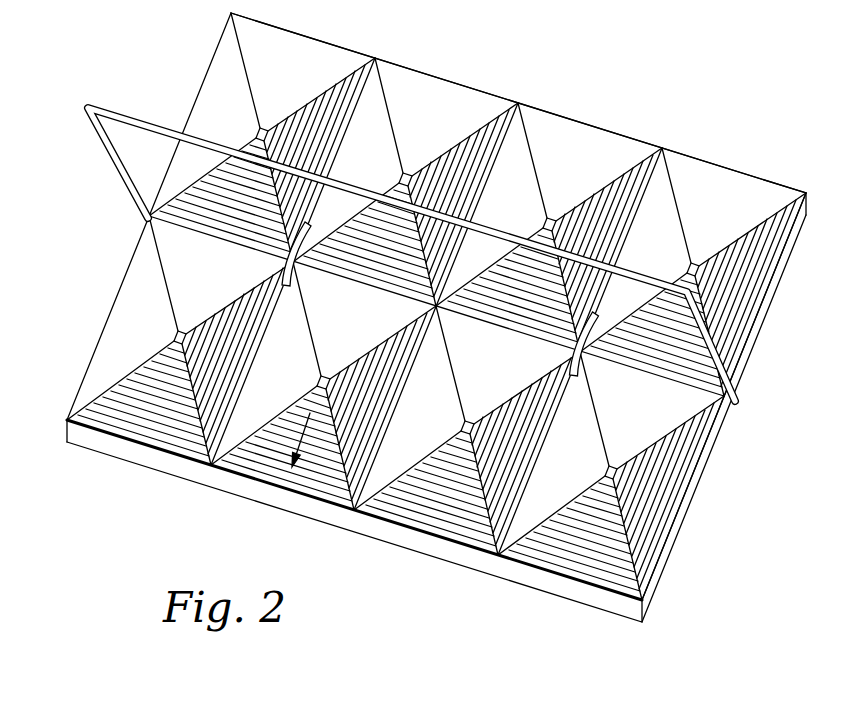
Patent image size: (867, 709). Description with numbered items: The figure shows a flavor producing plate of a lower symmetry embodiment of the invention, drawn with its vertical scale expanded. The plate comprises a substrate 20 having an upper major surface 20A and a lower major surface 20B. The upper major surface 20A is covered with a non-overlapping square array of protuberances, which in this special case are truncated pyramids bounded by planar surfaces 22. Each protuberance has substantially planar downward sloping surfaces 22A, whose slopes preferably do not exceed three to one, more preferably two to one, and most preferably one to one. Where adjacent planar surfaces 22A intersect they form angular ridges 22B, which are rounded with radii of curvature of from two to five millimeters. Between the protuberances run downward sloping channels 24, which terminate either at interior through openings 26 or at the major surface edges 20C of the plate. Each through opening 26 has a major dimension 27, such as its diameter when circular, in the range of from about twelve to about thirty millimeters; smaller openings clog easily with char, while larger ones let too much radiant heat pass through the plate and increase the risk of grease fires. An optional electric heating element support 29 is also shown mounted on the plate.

The substrate 20 is at (185, 473).
The upper major surface 20A is at (520, 555).
The lower major surface 20B is at (560, 602).
The major surface edge 20C is at (372, 513).
The planar surface 22 is at (657, 507).
The downward sloping surface 22A is at (313, 435).
The angular ridge 22B is at (118, 385).
The downward sloping channel 24 is at (670, 383).
The through opening 26 is at (580, 335).
The major dimension 27 is at (307, 233).
The electric heating element support 29 is at (107, 157).